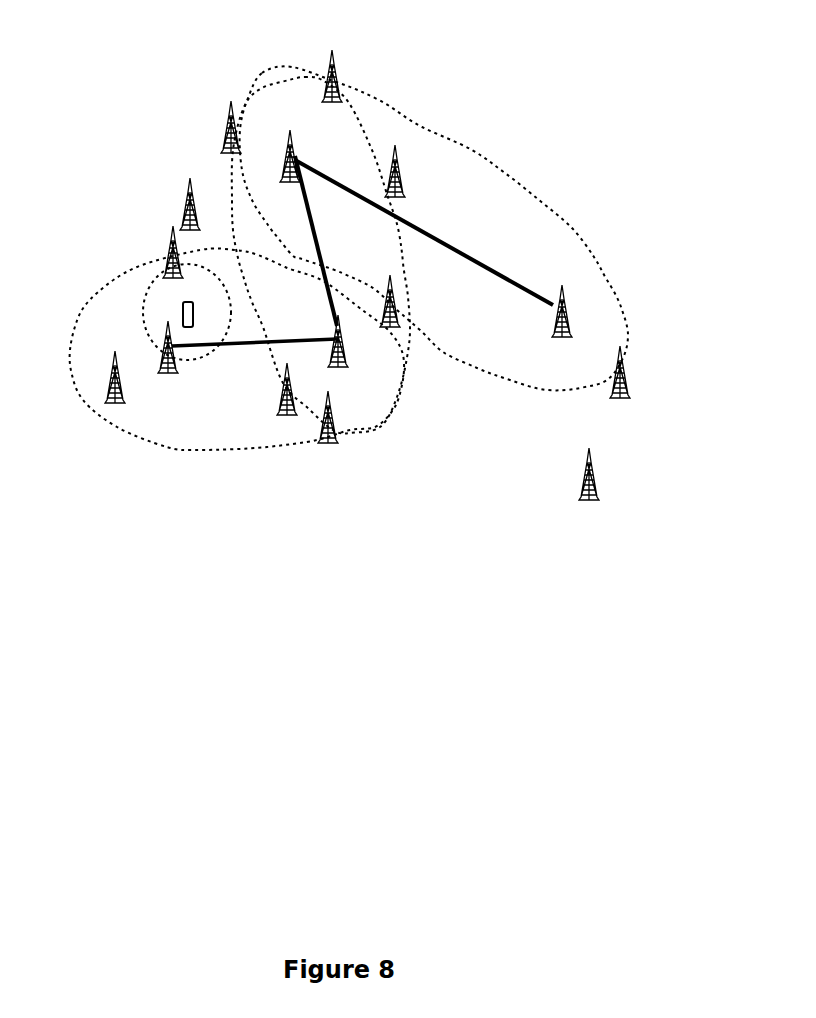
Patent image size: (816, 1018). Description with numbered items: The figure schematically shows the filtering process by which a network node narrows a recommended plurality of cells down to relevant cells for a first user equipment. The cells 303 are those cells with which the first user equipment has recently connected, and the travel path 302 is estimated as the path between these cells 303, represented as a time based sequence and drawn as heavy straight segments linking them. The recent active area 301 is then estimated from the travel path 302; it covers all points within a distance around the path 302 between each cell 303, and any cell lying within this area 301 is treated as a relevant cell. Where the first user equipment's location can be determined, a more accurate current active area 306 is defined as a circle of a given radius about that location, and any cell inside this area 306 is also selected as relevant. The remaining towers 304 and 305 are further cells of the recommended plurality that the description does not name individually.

The recent active area 301 is at (279, 70).
The travel path 302 is at (320, 268).
The cell 303 is at (287, 143).
The base station outside coverage 304 is at (187, 213).
The base station 305 is at (335, 60).
The current active area 306 is at (147, 290).